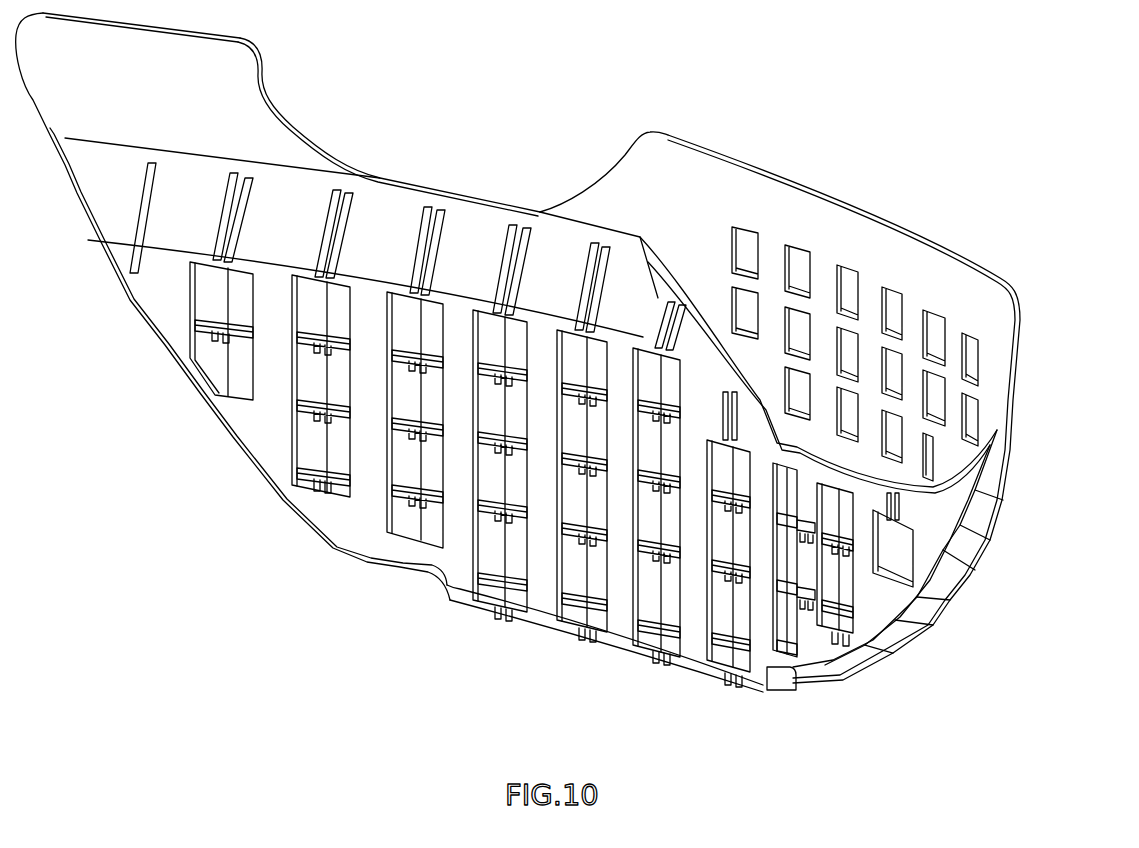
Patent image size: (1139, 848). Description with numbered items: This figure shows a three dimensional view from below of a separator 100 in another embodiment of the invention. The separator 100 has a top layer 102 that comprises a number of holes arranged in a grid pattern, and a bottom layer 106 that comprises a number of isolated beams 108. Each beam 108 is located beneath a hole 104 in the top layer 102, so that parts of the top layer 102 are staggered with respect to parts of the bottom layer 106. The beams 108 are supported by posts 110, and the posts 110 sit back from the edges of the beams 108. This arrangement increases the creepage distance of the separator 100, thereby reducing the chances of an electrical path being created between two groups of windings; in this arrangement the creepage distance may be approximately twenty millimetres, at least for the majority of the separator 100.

The separator 100 is at (565, 405).
The top layer 102 is at (270, 420).
The hole 104 is at (200, 372).
The bottom layer 106 is at (997, 433).
The isolated beam 108 is at (315, 438).
The post 110 is at (326, 490).